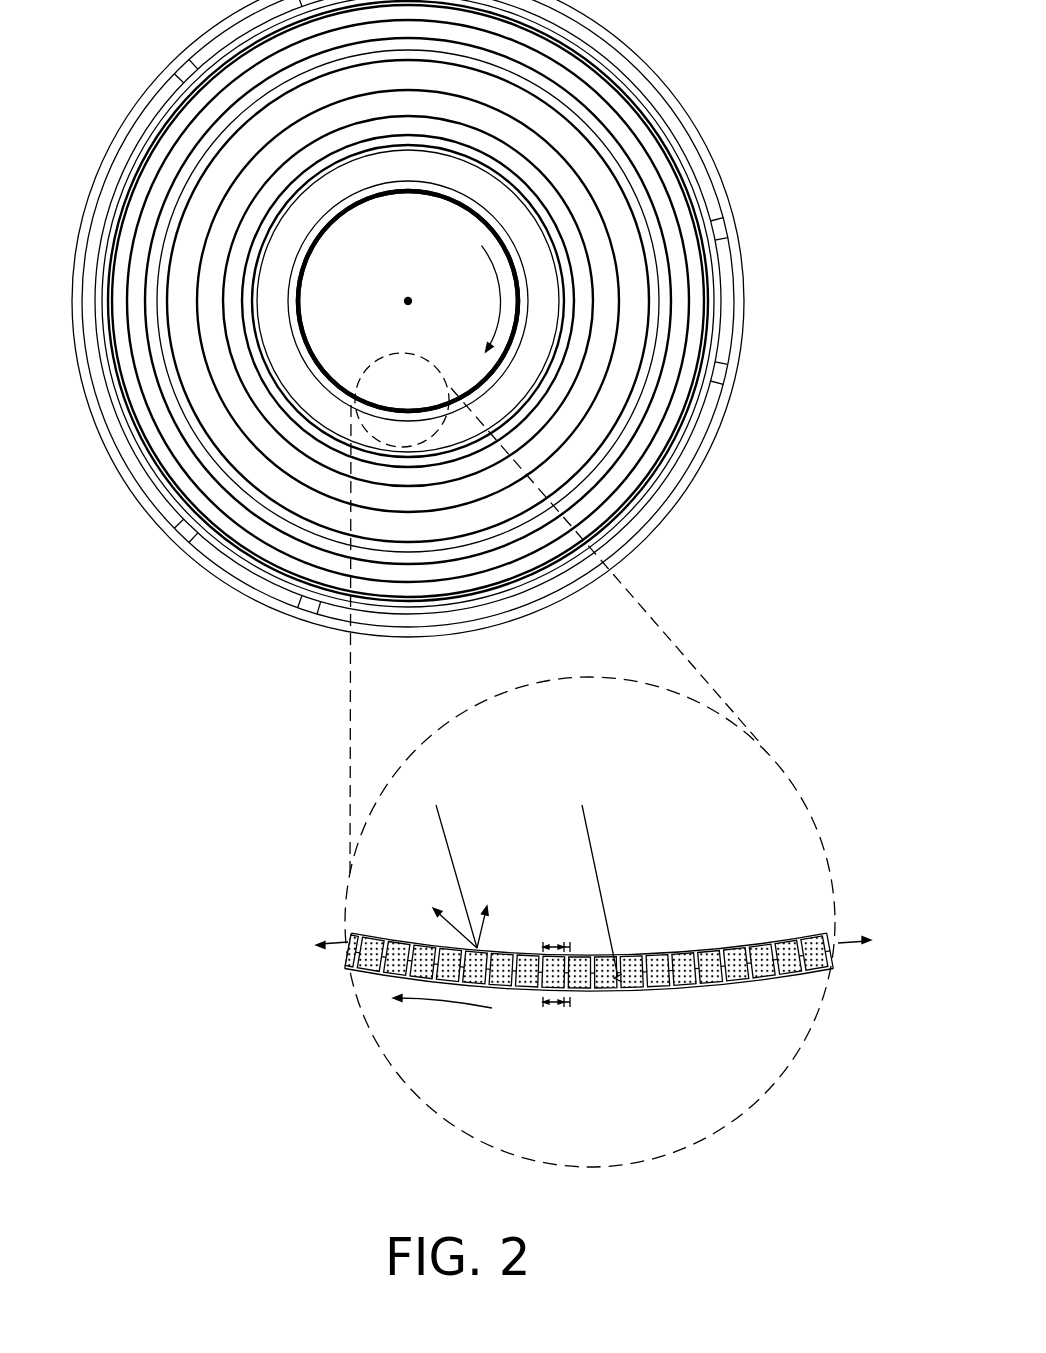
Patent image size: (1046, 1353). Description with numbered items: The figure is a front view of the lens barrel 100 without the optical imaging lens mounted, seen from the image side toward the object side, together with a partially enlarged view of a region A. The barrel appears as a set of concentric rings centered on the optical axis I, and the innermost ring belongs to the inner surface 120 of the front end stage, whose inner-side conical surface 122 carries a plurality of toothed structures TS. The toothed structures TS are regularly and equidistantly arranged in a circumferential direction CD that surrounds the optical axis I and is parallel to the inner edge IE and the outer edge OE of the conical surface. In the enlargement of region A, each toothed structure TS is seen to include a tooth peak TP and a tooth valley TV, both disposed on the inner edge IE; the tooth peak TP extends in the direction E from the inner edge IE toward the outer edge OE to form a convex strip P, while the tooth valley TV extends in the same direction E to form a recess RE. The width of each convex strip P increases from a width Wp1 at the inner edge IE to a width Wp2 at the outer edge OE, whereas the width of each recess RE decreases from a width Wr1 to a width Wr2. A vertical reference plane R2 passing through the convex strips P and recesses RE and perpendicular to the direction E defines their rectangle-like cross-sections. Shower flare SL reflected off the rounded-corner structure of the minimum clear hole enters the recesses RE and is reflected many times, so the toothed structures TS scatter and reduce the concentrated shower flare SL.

The lens barrel 100 is at (782, 615).
The inner surface 120 is at (408, 301).
The inner-side conical surface 122 is at (336, 224).
The toothed structures TS is at (296, 300).
The optical axis I is at (408, 301).
The circumferential direction CD is at (447, 648).
The region A is at (381, 356).
The inner edge IE is at (388, 941).
The outer edge OE is at (633, 991).
The recess RE is at (567, 978).
The direction E is at (840, 837).
The convex strip P is at (685, 984).
The tooth peak TP is at (681, 948).
The tooth valley TV is at (695, 950).
The shower flare SL is at (443, 829).
The width of the convex strip aligned with the inner edge Wp1 is at (551, 945).
The width of the recess aligned with the inner edge Wr1 is at (567, 945).
The width of the convex strip aligned with the outer edge Wp2 is at (552, 1005).
The width of the recess aligned with the outer edge Wr2 is at (567, 1005).
The vertical reference plane R2 is at (594, 944).